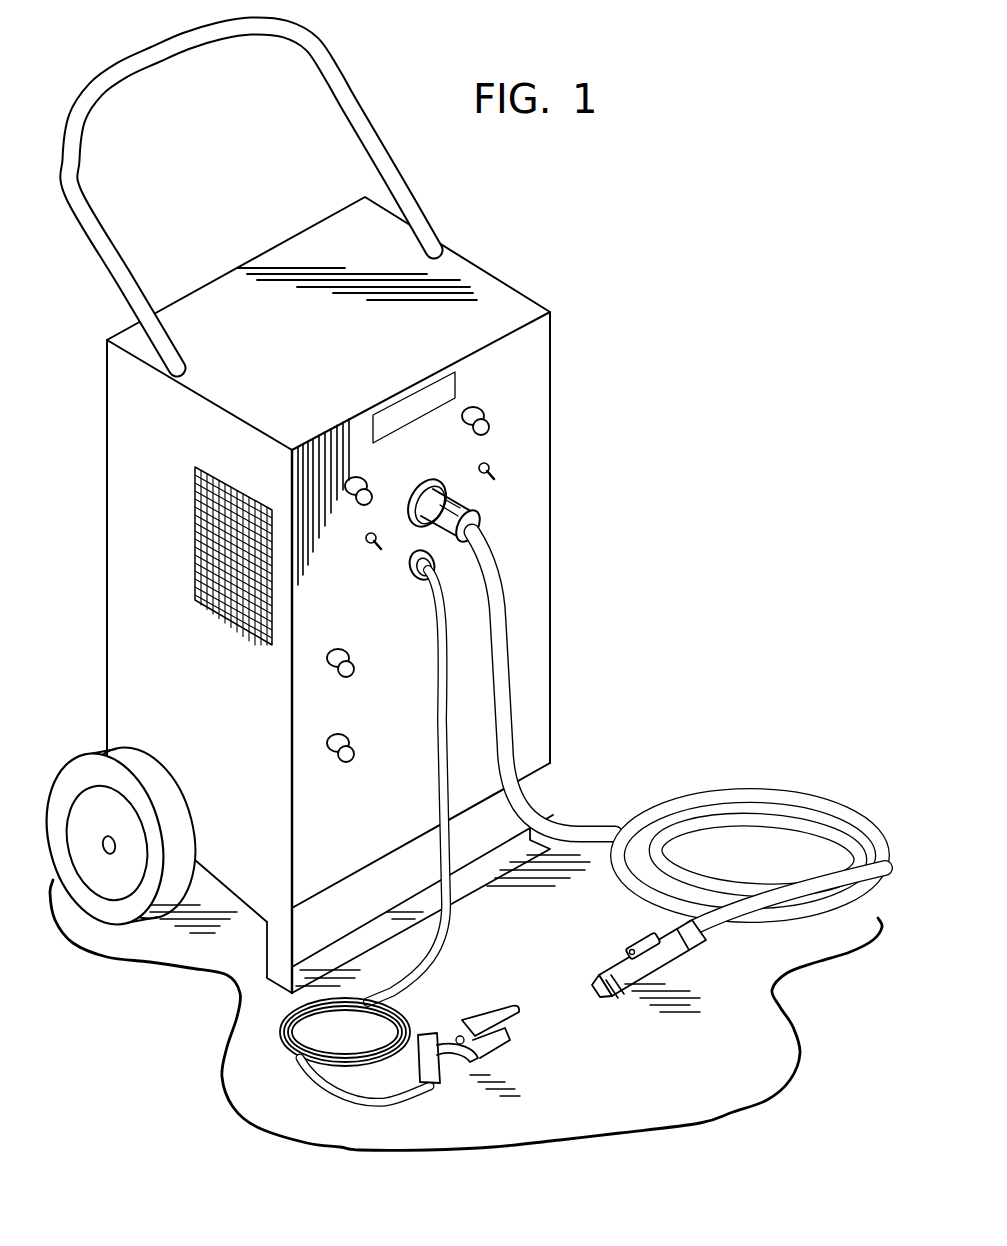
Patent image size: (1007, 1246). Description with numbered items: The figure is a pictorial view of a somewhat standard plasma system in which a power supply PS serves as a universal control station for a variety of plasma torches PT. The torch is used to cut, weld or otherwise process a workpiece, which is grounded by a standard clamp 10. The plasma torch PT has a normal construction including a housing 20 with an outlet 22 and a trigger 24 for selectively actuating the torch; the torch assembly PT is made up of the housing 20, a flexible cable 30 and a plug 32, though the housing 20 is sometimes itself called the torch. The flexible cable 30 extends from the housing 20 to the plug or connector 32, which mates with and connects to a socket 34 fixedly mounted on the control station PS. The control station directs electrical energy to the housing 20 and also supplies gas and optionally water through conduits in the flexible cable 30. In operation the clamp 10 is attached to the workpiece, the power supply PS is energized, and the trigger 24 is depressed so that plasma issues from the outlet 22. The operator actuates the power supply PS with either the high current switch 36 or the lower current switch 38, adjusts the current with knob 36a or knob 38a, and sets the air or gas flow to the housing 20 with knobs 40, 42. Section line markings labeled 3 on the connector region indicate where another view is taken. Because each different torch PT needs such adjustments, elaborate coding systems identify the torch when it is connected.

The power supply PS is at (505, 288).
The plasma torch PT is at (720, 785).
The clamp 10 is at (490, 1008).
The housing 20 is at (660, 976).
The outlet 22 is at (597, 992).
The trigger 24 is at (633, 950).
The flexible cable 30 is at (578, 826).
The plug 32 is at (465, 510).
The socket 34 is at (432, 482).
The high current switch 36 is at (495, 471).
The knob 36a is at (490, 425).
The lower current switch 38 is at (367, 546).
The knob 38a is at (362, 478).
The knob 40 is at (333, 668).
The knob 42 is at (333, 755).
The section line 3- 3 is at (387, 482).